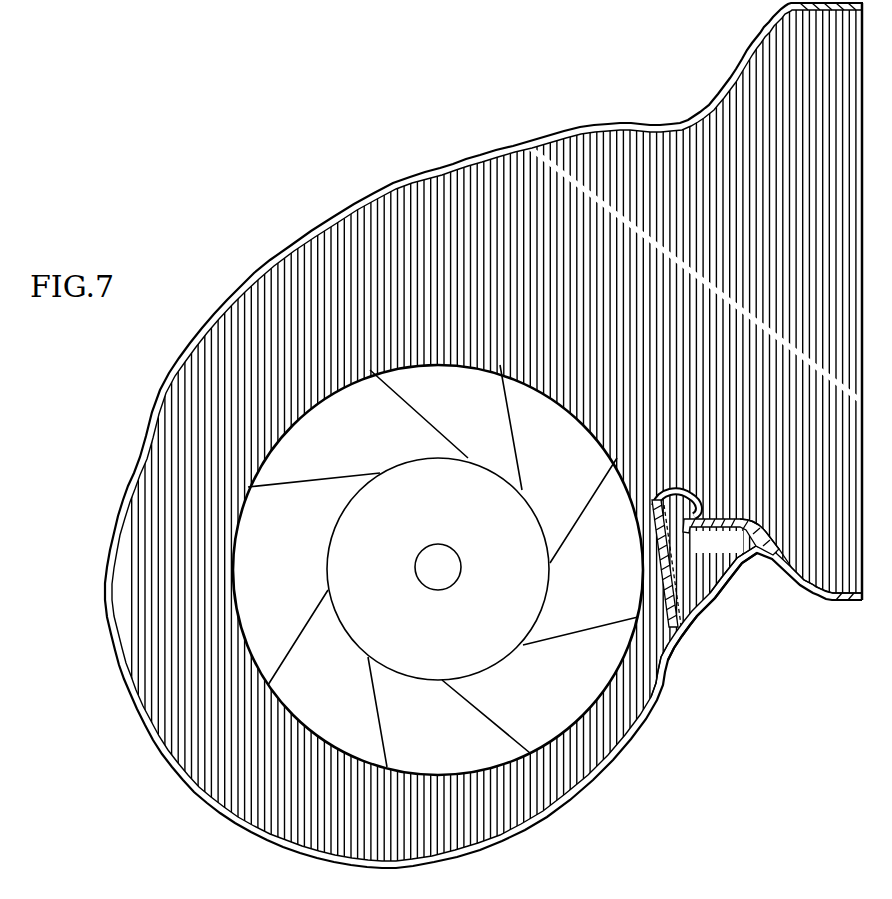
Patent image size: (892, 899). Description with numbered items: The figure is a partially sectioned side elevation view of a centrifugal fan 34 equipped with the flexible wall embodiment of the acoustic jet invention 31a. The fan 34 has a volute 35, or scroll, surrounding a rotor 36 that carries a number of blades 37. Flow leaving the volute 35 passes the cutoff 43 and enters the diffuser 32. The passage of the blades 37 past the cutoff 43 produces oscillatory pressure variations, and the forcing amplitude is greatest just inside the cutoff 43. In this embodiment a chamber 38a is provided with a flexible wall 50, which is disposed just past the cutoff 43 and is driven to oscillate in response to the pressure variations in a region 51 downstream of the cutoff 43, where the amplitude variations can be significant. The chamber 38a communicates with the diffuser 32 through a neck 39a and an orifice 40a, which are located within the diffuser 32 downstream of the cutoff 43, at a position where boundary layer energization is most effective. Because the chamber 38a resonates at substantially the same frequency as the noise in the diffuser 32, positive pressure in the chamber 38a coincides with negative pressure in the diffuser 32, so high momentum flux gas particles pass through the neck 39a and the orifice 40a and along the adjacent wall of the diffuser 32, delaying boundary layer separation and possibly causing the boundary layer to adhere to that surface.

The volute 35 is at (103, 576).
The rotor 36 is at (438, 555).
The blades 37 is at (612, 487).
The cutoff 43 is at (657, 500).
The neck 39a is at (697, 500).
The orifice 40a is at (733, 513).
The diffuser 32 is at (798, 523).
The chamber 38a is at (742, 551).
The flexible wall 50 is at (650, 575).
The region 51 is at (648, 625).
The acoustic jet embodiment 31a is at (752, 568).
The centrifugal fan 34 is at (705, 650).